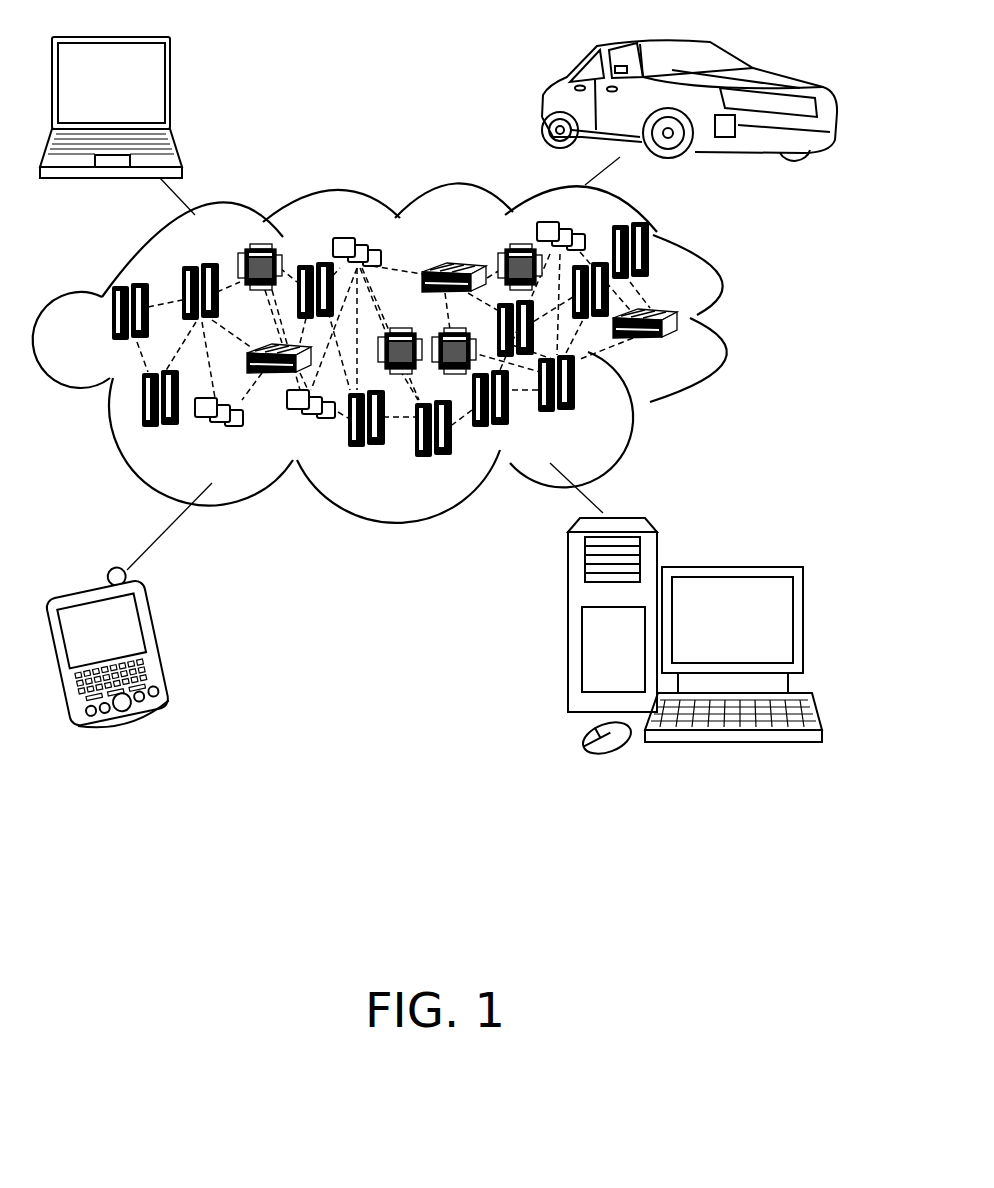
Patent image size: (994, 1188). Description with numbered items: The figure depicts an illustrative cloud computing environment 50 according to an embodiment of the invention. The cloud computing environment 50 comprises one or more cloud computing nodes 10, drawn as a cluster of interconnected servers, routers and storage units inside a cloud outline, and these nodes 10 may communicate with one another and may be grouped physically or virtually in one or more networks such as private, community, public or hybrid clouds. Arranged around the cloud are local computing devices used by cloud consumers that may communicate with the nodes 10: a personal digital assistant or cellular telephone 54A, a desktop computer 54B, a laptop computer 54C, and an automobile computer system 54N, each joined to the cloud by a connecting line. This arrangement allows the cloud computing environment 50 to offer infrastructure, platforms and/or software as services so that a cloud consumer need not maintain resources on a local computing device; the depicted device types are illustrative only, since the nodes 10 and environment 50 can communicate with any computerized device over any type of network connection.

The cloud computing nodes 10 is at (690, 351).
The cloud computing environment 50 is at (733, 318).
The personal digital assistant (PDA) or cellular telephone 54A is at (162, 648).
The desktop computer 54B is at (730, 565).
The laptop computer 54C is at (172, 90).
The automobile computer system 54N is at (542, 103).